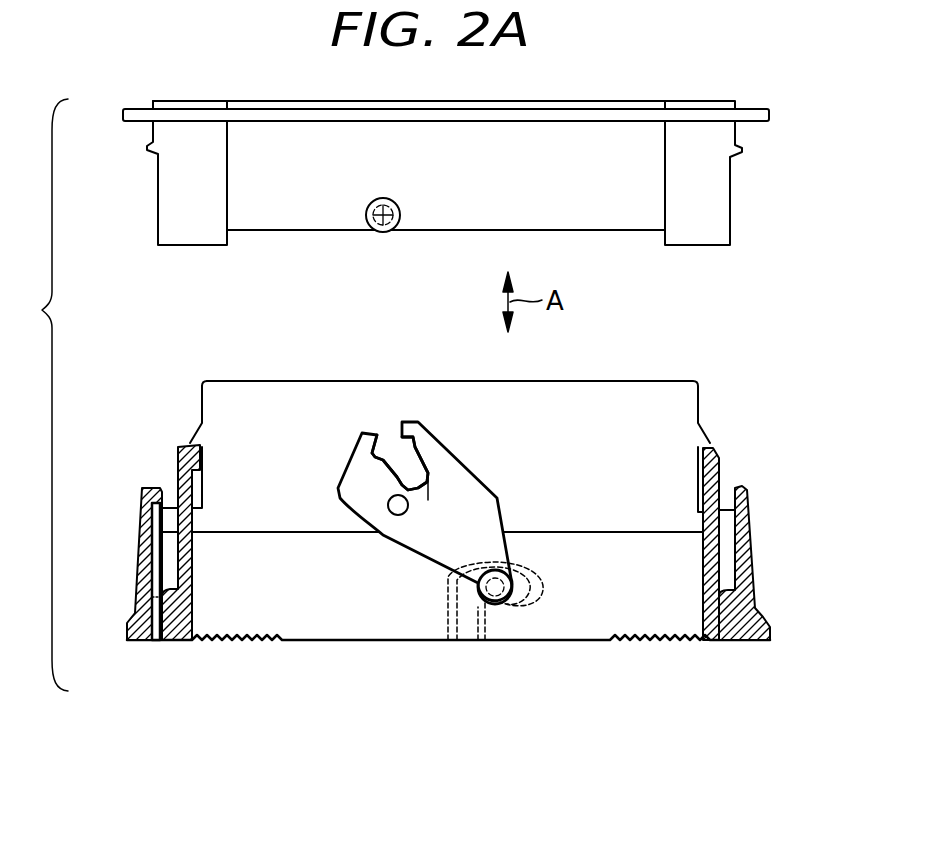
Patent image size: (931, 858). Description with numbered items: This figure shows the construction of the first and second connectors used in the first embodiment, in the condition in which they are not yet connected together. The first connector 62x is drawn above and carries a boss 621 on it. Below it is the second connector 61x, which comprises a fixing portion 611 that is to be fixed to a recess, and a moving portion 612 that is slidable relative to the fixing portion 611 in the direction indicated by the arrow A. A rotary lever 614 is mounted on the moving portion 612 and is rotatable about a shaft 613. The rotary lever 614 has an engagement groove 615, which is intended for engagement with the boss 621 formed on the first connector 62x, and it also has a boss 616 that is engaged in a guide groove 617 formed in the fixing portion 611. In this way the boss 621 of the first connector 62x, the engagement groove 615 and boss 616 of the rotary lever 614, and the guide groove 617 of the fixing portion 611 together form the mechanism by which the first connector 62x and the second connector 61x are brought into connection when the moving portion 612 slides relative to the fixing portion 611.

The first connector 62x is at (158, 232).
The boss 621 is at (383, 230).
The second connector 61x is at (753, 510).
The fixing portion 611 is at (738, 634).
The moving portion 612 is at (670, 408).
The shaft 613 is at (398, 515).
The rotary lever 614 is at (473, 488).
The engagement groove 615 is at (412, 457).
The boss 616 is at (502, 598).
The guide groove 617 is at (462, 642).